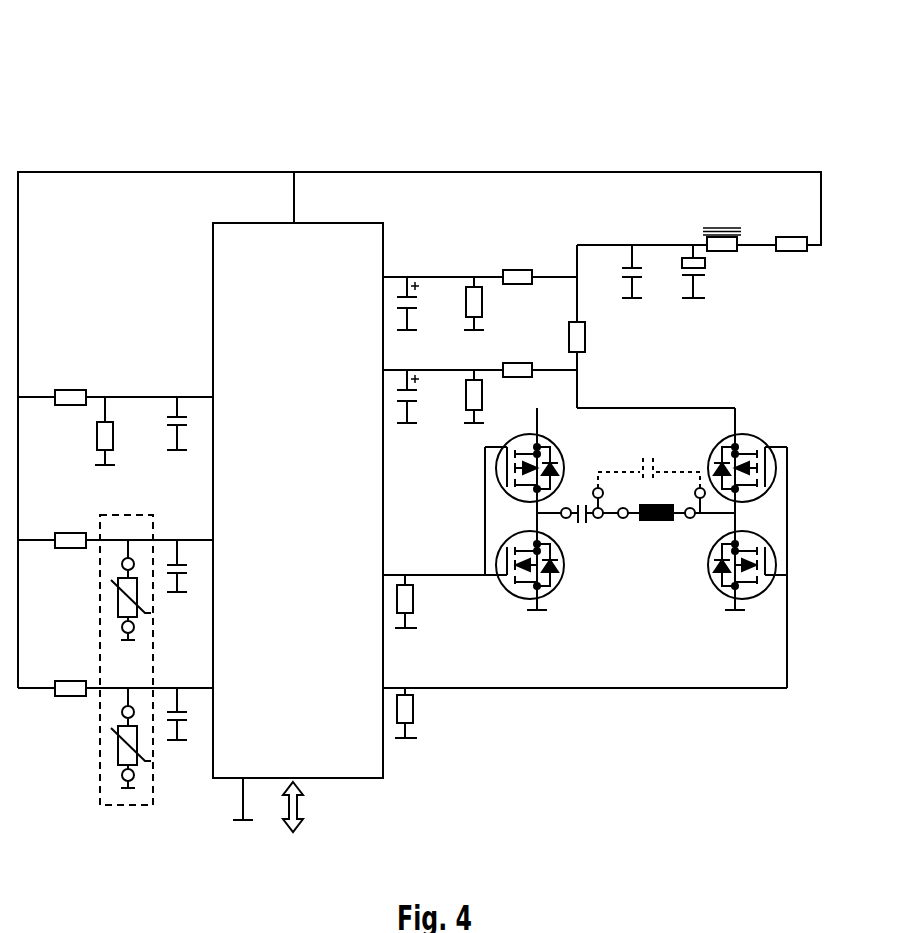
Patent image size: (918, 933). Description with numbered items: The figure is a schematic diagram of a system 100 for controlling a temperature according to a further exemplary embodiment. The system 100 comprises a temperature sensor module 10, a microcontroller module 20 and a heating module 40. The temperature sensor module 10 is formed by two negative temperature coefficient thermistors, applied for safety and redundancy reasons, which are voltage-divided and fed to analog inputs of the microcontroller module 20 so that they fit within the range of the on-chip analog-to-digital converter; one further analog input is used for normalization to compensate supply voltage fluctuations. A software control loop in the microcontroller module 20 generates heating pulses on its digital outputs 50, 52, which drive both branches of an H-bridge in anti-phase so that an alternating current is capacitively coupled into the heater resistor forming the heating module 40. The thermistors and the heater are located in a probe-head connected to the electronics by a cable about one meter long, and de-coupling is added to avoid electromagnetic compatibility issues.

The system for controlling a temperature 100 is at (131, 136).
The microcontroller module 20 is at (347, 232).
The temperature sensor module 10 is at (115, 520).
The digital output pin 50 is at (434, 584).
The digital output pin 52 is at (585, 695).
The heating module 40 is at (645, 521).